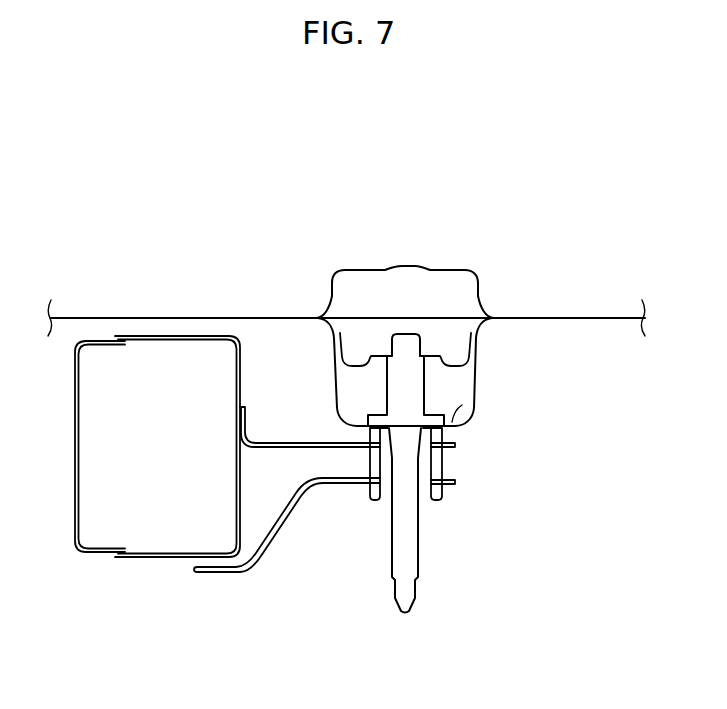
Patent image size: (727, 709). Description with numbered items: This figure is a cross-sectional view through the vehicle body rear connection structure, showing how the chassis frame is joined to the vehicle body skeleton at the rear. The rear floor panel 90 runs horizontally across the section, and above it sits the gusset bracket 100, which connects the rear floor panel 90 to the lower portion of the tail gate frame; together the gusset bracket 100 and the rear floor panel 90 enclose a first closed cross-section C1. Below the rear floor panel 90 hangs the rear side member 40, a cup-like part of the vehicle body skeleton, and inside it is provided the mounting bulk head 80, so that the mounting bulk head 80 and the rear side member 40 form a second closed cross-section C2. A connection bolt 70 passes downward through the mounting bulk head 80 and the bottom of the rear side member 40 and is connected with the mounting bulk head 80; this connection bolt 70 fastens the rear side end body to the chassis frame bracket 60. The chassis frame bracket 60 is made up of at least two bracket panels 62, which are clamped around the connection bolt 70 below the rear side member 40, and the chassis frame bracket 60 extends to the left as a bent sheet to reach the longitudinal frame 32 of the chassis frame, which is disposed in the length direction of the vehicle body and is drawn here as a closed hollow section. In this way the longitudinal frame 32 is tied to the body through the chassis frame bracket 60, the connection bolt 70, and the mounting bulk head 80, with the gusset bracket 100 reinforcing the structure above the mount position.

The longitudinal frame 32 is at (137, 557).
The rear side member 40 is at (473, 393).
The chassis frame bracket 60 is at (261, 600).
The bracket panel 62 is at (456, 445).
The connection bolt 70 is at (407, 589).
The mounting bulk head 80 is at (465, 375).
The rear floor panel 90 is at (212, 316).
The gusset bracket 100 is at (435, 268).
The first closed cross-section C1 is at (366, 293).
The second closed cross-section C2 is at (465, 417).